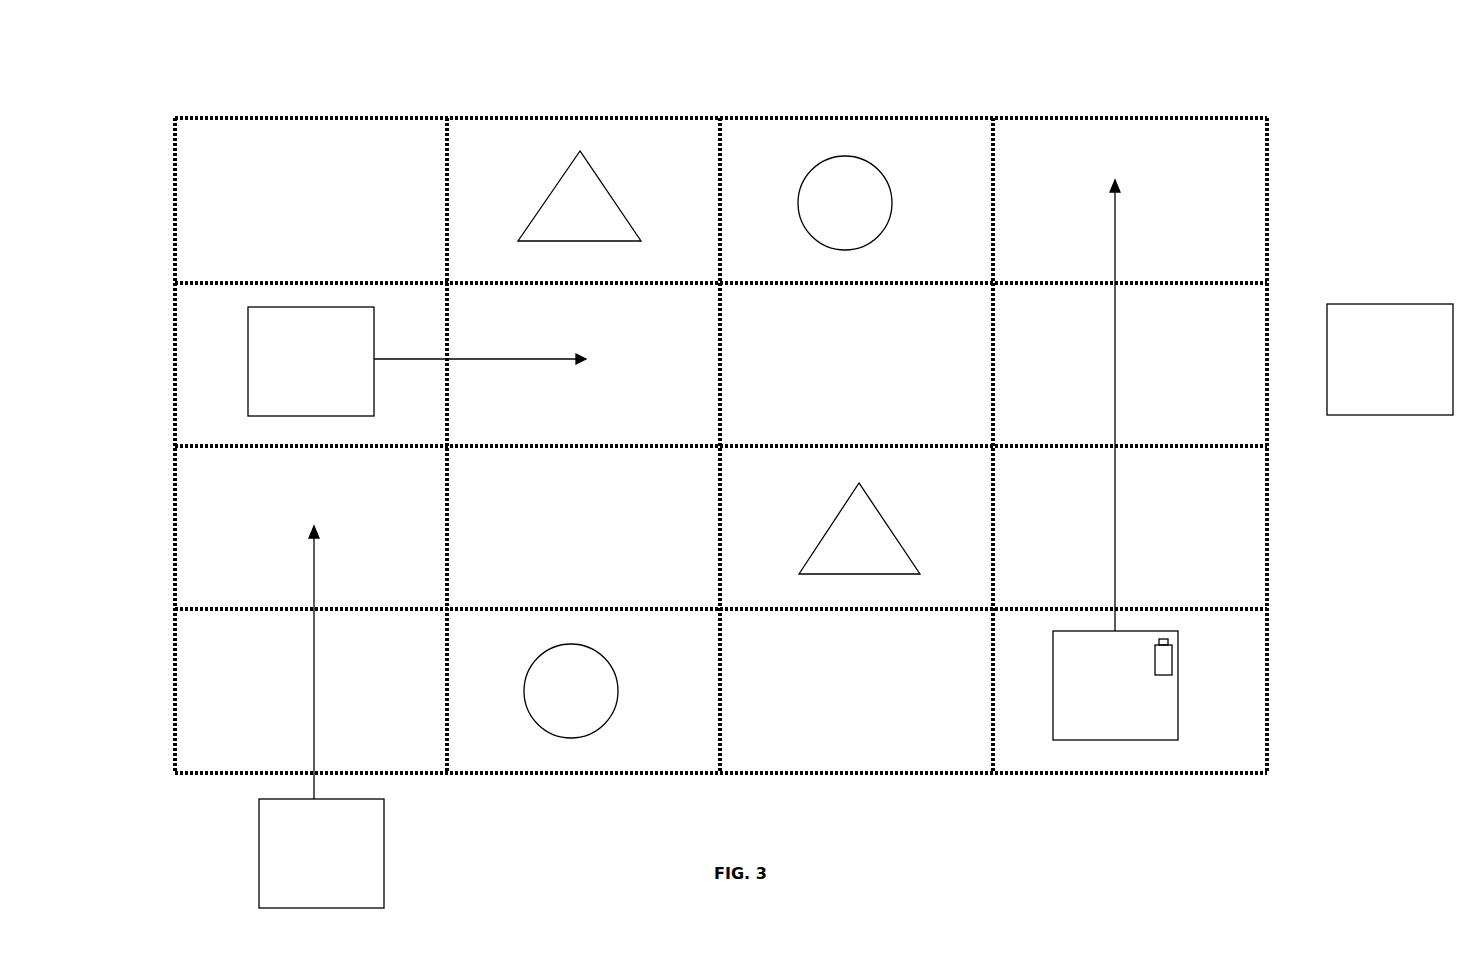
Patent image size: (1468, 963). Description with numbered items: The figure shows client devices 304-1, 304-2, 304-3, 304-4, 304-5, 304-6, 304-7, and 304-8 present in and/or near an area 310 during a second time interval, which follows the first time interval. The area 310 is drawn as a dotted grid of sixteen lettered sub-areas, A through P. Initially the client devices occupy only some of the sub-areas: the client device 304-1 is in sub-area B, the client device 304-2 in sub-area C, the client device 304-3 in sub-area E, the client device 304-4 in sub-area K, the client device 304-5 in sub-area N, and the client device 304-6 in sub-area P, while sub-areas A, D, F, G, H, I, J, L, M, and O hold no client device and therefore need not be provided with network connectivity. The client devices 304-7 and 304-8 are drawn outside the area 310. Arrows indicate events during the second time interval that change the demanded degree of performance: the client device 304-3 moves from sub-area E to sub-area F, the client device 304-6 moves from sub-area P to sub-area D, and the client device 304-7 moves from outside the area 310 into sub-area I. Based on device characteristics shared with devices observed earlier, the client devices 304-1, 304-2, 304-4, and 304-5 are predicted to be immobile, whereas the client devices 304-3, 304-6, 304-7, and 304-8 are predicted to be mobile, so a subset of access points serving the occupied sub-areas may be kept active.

The area 310 is at (172, 117).
The client device 304-1 is at (548, 196).
The client device 304-2 is at (892, 215).
The client device 304-3 is at (247, 357).
The client device 304-4 is at (826, 525).
The client device 304-5 is at (618, 696).
The client device 304-6 is at (1052, 695).
The client device 304-7 is at (258, 858).
The client device 304-8 is at (1391, 416).